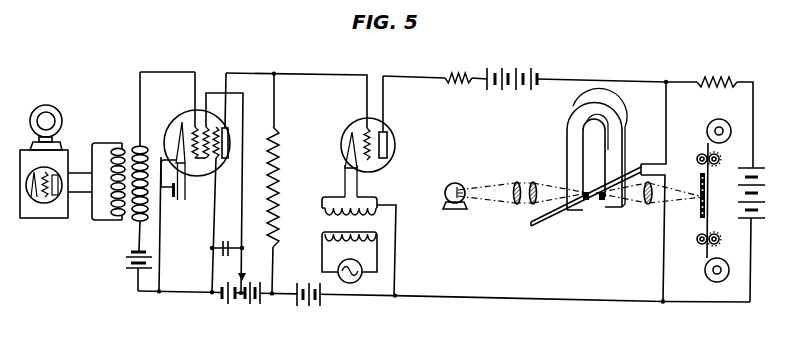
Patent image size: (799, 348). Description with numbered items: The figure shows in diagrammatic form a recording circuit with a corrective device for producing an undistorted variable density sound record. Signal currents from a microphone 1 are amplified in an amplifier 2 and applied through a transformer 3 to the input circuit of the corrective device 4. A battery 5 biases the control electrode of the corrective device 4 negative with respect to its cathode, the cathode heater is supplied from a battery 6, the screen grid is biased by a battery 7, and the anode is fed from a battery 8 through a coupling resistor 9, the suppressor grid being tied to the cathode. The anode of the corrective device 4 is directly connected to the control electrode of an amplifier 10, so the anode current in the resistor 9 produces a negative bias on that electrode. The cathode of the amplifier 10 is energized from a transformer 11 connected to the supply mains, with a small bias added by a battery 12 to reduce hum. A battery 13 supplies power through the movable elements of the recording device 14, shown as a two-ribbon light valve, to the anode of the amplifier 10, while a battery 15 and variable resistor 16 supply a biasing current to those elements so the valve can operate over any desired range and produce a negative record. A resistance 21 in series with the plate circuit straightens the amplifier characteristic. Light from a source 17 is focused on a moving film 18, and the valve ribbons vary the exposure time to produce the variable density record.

The microphone 1 is at (60, 112).
The amplifier 2 is at (52, 219).
The transformer 3 is at (128, 222).
The corrective device 4 is at (198, 125).
The battery 5 is at (124, 268).
The battery 6 is at (173, 199).
The battery 7 is at (227, 305).
The battery 8 is at (249, 305).
The coupling resistor 9 is at (280, 184).
The amplifier 10 is at (352, 122).
The transformer 11 is at (321, 233).
The battery 12 is at (304, 306).
The battery 13 is at (509, 66).
The recording device 14 is at (607, 149).
The battery 15 is at (740, 194).
The variable resistor 16 is at (718, 77).
The light source 17 is at (457, 183).
The moving film 18 is at (706, 250).
The resistance 21 is at (459, 71).